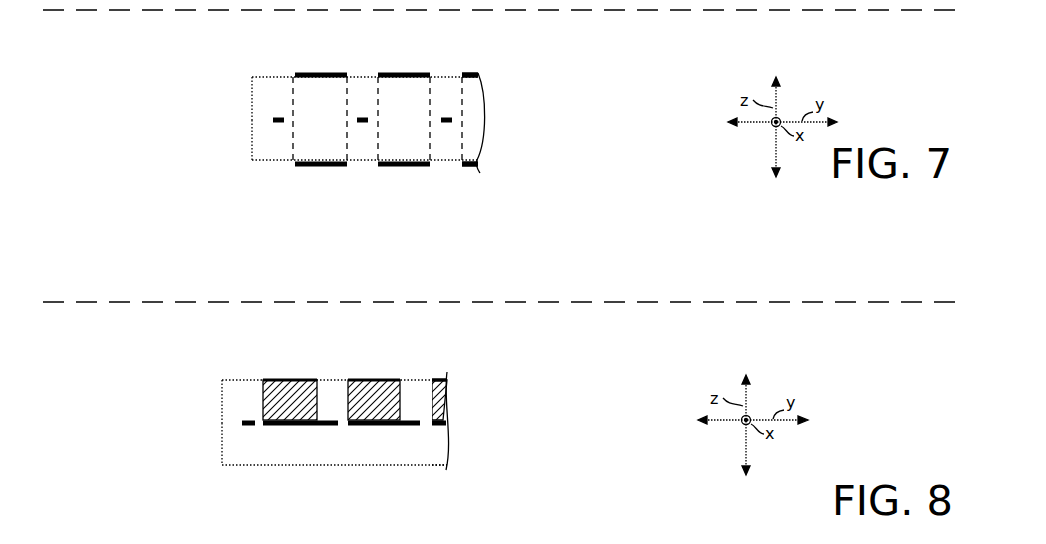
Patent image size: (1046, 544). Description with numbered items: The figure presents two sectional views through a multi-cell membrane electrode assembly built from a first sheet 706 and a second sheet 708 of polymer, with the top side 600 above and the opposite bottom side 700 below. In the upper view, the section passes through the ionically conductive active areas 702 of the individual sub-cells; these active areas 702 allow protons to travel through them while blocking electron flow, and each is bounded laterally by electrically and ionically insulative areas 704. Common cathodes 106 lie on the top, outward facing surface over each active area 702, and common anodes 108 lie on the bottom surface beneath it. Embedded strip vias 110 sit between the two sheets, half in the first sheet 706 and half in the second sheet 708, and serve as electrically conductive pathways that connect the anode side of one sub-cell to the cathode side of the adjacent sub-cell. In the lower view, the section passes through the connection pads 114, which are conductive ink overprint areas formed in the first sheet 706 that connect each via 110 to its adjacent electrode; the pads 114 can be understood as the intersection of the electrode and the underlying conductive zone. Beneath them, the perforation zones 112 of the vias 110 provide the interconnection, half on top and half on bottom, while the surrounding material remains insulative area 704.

In FIG. 7, the common cathode 106 is at (330, 73).
In FIG. 7, the common anode 108 is at (325, 168).
In FIG. 7, the embedded strip via 110 is at (281, 117).
In FIG. 8, the embedded strip via 110 is at (248, 420).
In FIG. 8, the perforation zone 112 is at (298, 426).
In FIG. 8, the connection pad 114 is at (280, 380).
In FIG. 7, the top side 600 is at (467, 64).
In FIG. 8, the top side 600 is at (437, 368).
In FIG. 7, the bottom side 700 is at (459, 177).
In FIG. 8, the bottom side 700 is at (427, 481).
In FIG. 7, the ionically conductive active area 702 is at (322, 102).
In FIG. 7, the insulative area 704 is at (357, 87).
In FIG. 8, the insulative area 704 is at (332, 452).
In FIG. 7, the first sheet 706 is at (250, 78).
In FIG. 8, the first sheet 706 is at (220, 381).
In FIG. 7, the second sheet 708 is at (250, 121).
In FIG. 8, the second sheet 708 is at (220, 424).